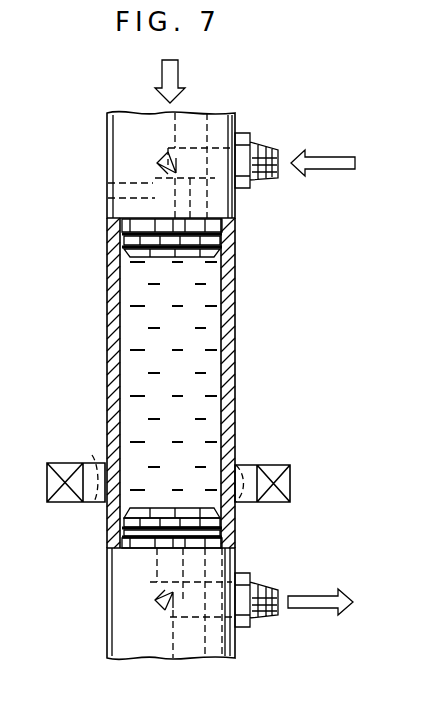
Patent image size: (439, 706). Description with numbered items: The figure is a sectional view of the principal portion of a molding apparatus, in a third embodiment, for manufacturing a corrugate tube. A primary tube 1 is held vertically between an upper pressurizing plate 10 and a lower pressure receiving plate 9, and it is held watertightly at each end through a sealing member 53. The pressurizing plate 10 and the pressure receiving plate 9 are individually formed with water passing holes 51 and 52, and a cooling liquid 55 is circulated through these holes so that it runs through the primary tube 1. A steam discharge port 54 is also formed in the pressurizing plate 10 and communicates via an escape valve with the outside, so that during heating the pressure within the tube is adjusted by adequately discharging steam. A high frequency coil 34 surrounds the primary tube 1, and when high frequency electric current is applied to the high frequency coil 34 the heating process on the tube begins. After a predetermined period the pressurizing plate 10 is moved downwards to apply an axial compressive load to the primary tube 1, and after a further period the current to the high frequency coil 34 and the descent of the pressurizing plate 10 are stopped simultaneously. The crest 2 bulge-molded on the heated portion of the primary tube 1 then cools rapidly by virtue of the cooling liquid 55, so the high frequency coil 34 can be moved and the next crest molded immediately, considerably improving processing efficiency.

The primary tube 1 is at (110, 350).
The crest 2 is at (92, 455).
The pressure receiving plate 9 is at (110, 647).
The pressurizing plate 10 is at (108, 121).
The high frequency coil 34 is at (288, 473).
The water passing hole 51 is at (190, 207).
The water passing hole 52 is at (150, 583).
The sealing member 53 is at (226, 238).
The steam discharge port 54 is at (108, 196).
The cooling liquid 55 is at (200, 360).